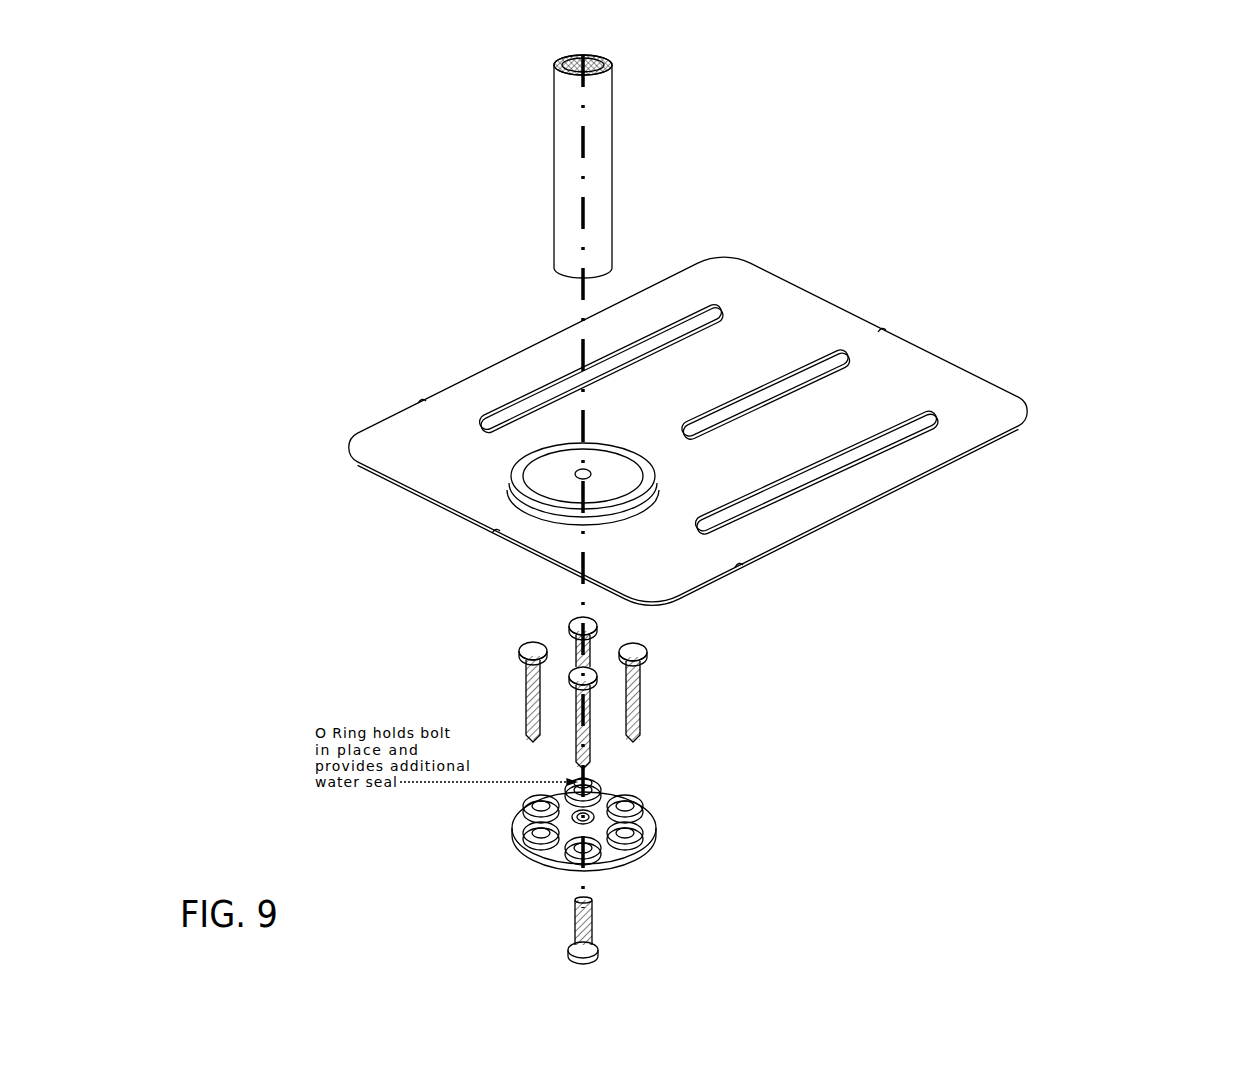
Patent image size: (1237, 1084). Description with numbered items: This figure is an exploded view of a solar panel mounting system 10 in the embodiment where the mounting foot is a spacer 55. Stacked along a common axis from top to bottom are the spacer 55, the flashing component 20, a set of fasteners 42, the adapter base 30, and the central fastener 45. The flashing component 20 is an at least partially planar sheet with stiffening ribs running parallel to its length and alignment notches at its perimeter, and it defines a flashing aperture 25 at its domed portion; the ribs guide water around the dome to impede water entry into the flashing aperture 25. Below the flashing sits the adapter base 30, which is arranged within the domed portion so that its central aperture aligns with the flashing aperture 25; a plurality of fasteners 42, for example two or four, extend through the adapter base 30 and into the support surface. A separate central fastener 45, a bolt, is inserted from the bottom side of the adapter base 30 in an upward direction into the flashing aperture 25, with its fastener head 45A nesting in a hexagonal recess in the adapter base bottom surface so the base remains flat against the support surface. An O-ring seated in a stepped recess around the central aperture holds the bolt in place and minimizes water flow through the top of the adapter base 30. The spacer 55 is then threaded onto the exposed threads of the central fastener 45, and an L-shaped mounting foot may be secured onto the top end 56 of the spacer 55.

The mounting system 10 is at (1126, 198).
The flashing component 20 is at (775, 551).
The flashing aperture 25 is at (578, 478).
The adapter base 30 is at (656, 841).
The fasteners 42 is at (640, 717).
The central fastener 45 is at (605, 944).
The fastener head 45A is at (598, 953).
The spacer 55 is at (612, 158).
The top end 56 is at (608, 63).